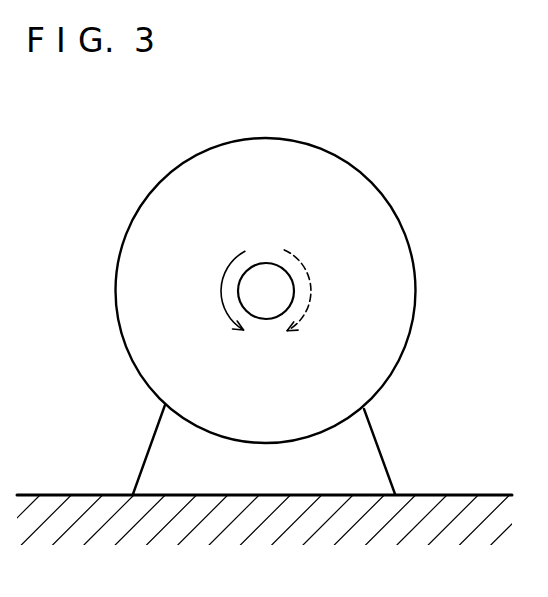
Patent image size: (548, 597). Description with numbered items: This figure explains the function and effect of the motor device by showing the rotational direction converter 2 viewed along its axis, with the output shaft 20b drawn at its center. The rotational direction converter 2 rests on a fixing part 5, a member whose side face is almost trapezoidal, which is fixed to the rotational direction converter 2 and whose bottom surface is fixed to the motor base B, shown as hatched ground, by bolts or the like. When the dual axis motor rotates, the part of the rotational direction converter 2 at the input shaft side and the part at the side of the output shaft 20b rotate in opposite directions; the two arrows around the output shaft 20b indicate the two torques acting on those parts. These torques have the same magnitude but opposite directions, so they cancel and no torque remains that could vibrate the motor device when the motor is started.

The rotational direction converter 2 is at (360, 155).
The output shaft 20b is at (266, 262).
The fixing part 5 is at (368, 452).
The motor base B is at (457, 495).